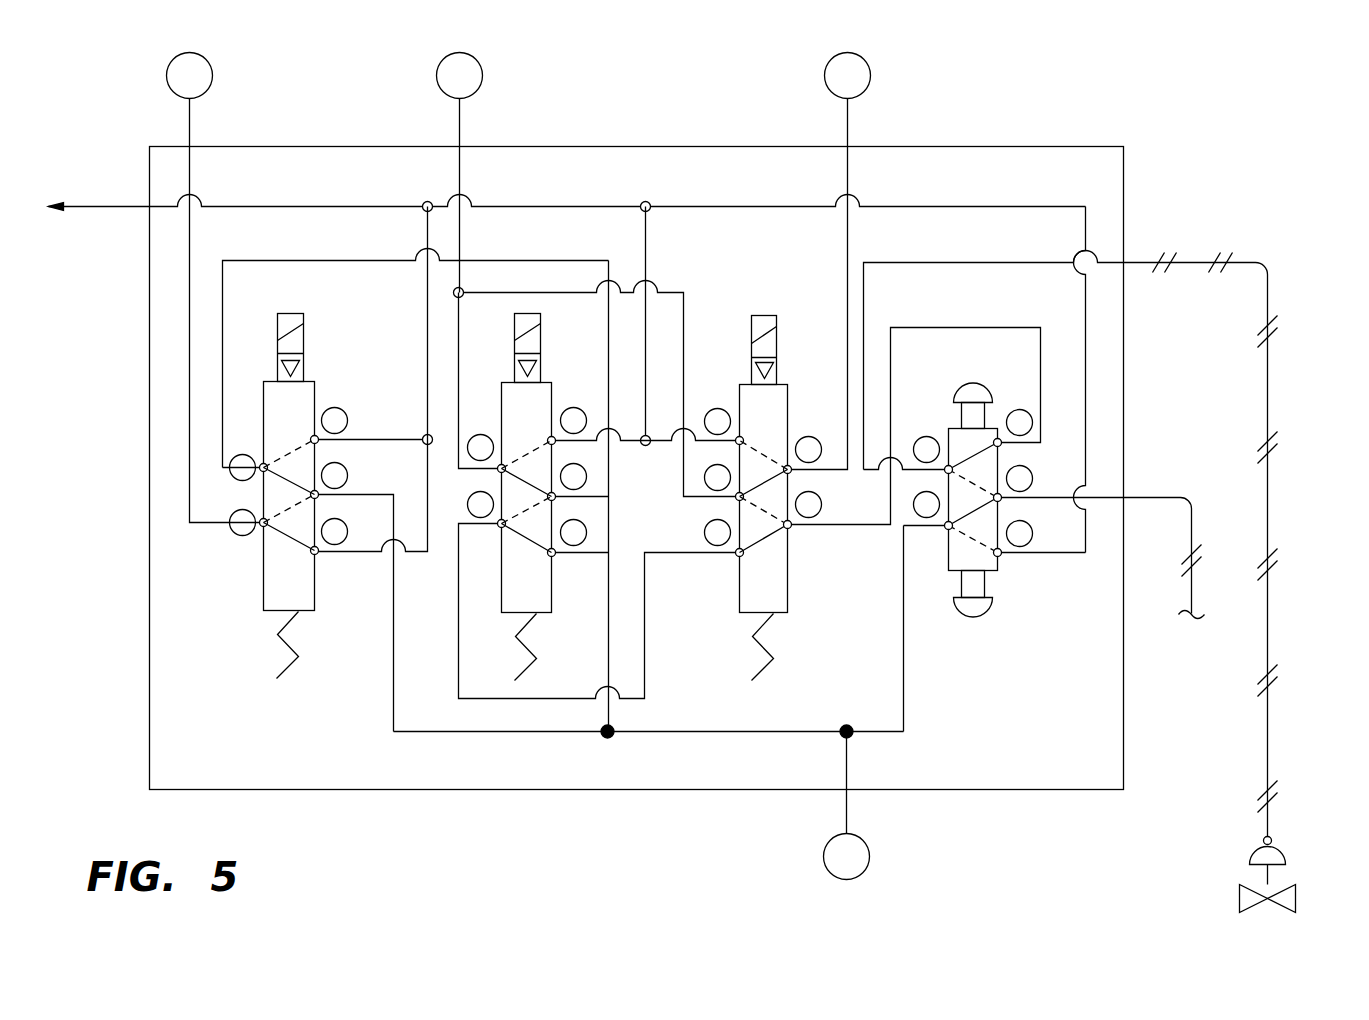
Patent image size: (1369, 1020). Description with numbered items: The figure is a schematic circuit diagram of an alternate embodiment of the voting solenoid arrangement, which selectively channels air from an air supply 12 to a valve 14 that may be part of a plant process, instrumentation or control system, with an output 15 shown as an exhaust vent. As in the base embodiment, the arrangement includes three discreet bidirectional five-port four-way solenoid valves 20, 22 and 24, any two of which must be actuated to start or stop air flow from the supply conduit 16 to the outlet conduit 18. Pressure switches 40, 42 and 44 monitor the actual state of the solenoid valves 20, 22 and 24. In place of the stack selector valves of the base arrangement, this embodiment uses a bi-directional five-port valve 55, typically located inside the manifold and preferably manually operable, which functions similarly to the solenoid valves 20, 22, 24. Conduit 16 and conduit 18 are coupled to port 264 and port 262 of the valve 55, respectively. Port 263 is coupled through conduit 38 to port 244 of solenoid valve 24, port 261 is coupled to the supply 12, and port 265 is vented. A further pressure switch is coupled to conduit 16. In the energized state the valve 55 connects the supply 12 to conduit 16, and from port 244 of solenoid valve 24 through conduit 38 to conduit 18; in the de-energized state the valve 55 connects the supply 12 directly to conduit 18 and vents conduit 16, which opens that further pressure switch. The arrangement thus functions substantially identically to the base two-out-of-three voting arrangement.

The air supply 12 is at (1191, 651).
The valve 14 is at (1290, 896).
The output 15 is at (124, 205).
The conduit 16 is at (733, 733).
The conduit 18 is at (1267, 358).
The solenoid valve 20 is at (313, 381).
The solenoid valve 22 is at (551, 382).
The solenoid valve 24 is at (769, 498).
The conduit 38 is at (990, 327).
The pressure switch 40 is at (212, 74).
The pressure switch 42 is at (482, 74).
The pressure switch 44 is at (870, 74).
The bi-directional five-port valve 55 is at (948, 428).
The port 244 is at (789, 527).
The port 261 is at (1000, 500).
The port 262 is at (946, 470).
The port 263 is at (1000, 445).
The port 264 is at (946, 527).
The port 265 is at (1003, 554).